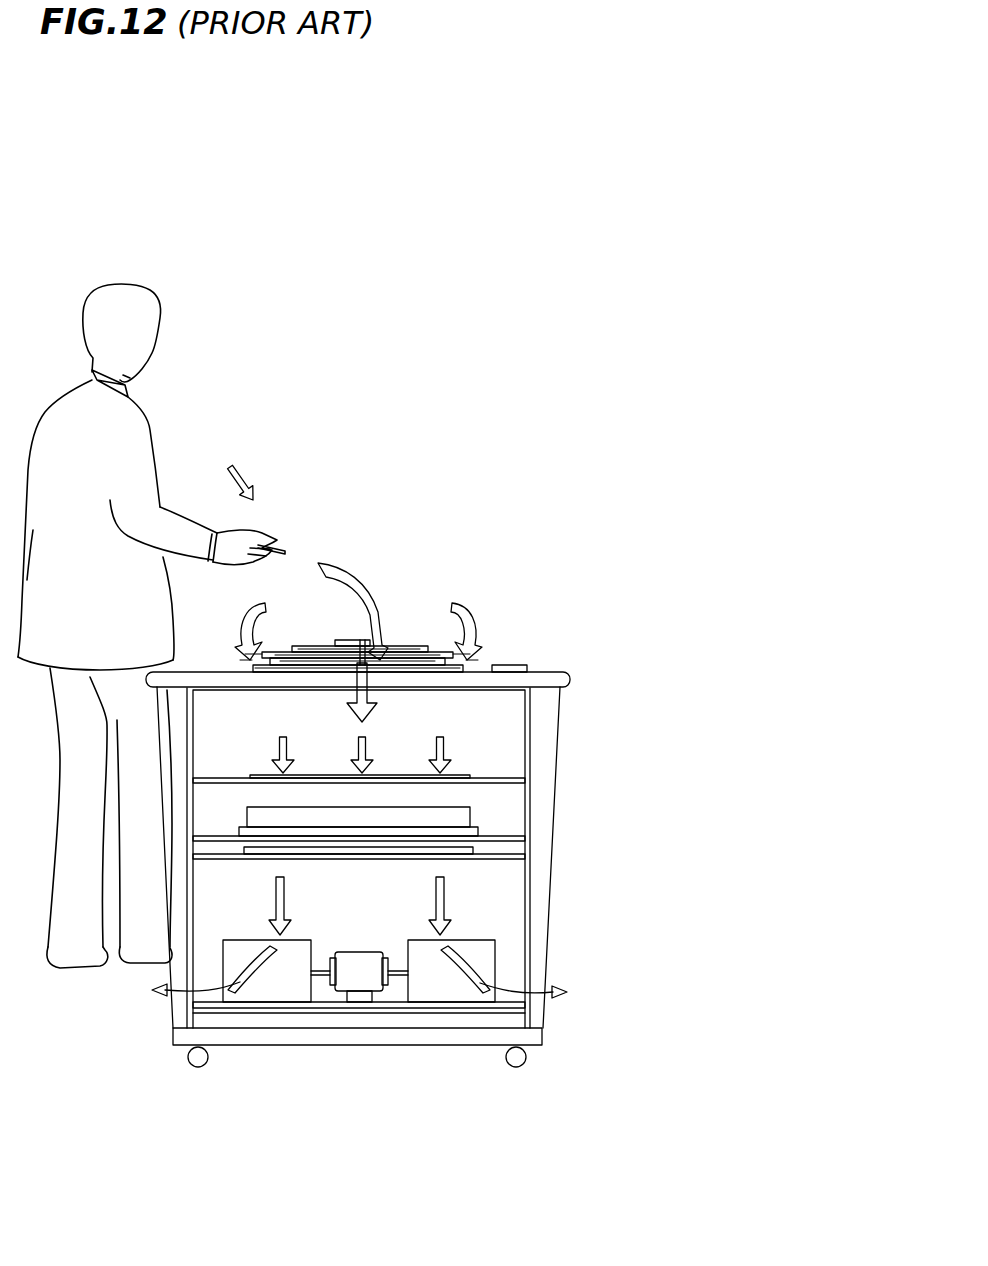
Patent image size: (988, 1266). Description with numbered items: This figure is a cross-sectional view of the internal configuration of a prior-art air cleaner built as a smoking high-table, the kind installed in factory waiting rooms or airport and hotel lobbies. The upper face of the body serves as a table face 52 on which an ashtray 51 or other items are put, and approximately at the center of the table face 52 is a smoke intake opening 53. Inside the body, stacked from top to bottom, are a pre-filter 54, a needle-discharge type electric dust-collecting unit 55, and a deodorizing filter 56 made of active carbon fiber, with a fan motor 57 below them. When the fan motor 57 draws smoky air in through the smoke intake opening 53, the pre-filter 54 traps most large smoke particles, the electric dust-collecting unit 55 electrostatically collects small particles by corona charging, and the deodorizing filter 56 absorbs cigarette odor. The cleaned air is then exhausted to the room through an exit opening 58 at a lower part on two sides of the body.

The ashtray 51 is at (510, 665).
The table face 52 is at (543, 672).
The smoke intake opening 53 is at (408, 648).
The pre-filter 54 is at (450, 777).
The electric dust-collecting unit 55 is at (455, 819).
The deodorizing filter 56 is at (458, 855).
The fan motor 57 is at (362, 978).
The exit opening 58 is at (545, 978).